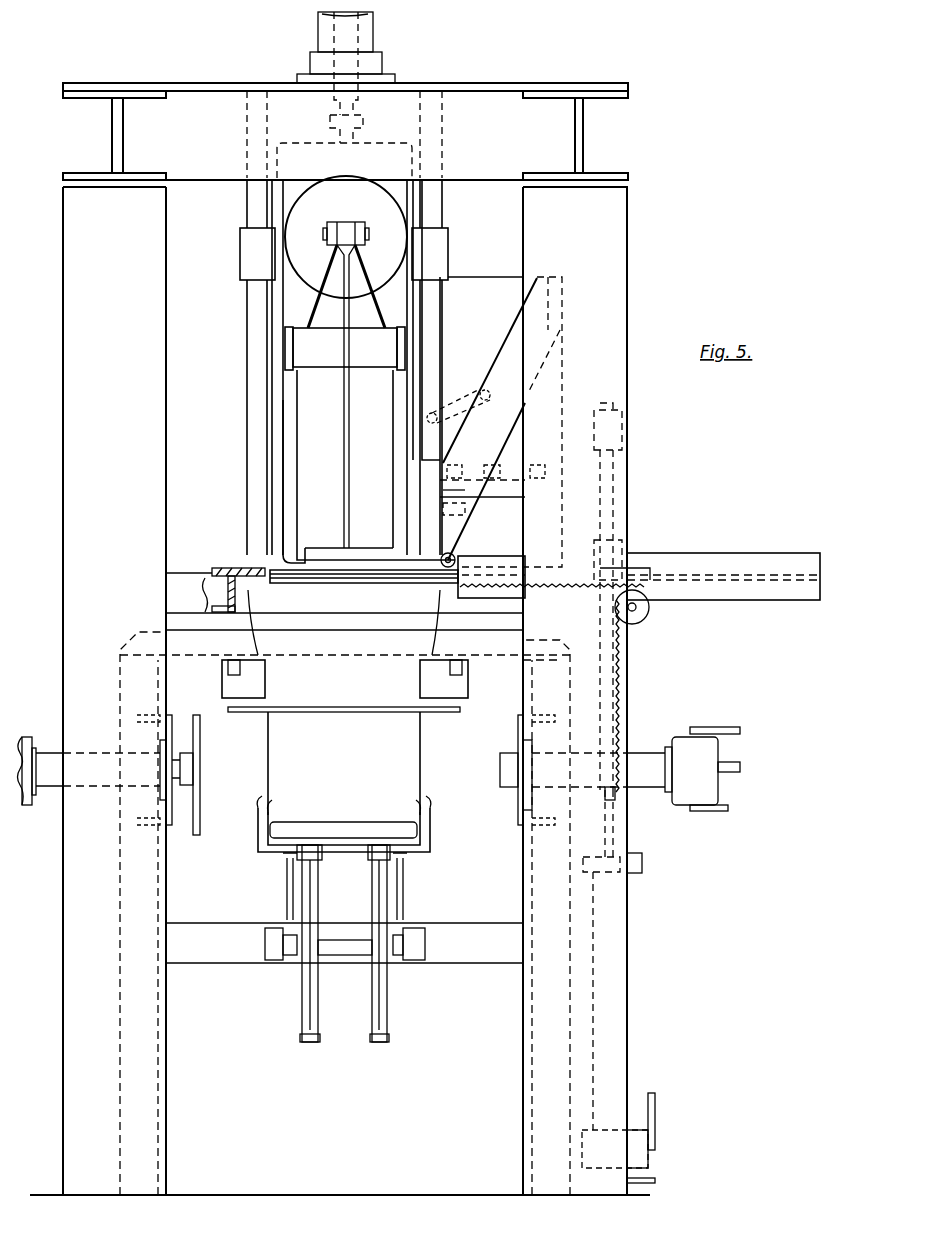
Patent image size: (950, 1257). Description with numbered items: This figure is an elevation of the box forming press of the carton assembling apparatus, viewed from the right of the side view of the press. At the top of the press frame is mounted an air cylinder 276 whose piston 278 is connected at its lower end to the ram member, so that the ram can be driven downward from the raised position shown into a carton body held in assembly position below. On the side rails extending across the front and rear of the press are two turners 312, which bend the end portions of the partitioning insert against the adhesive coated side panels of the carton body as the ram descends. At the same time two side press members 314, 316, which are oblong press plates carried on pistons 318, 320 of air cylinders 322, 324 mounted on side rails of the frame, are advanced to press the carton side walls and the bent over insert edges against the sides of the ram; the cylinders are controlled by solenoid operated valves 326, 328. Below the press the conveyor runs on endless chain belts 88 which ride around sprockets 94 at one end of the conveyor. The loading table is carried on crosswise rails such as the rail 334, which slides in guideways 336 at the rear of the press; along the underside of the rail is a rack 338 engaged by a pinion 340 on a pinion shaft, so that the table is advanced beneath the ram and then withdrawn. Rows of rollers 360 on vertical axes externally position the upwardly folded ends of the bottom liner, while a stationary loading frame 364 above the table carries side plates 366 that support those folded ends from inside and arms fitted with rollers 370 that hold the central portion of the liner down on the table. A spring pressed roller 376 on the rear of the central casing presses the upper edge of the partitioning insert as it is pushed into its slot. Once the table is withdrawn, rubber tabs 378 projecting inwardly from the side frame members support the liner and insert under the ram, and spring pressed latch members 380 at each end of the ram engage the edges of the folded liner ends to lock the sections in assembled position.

The endless chain belts 88 is at (375, 852).
The sprockets 94 is at (372, 990).
The air cylinder 276 is at (378, 45).
The piston 278 is at (328, 28).
The turners 312 is at (260, 678).
The side press member 314 is at (198, 833).
The side press member 316 is at (518, 815).
The piston 318 is at (186, 770).
The piston 320 is at (500, 770).
The air cylinder 322 is at (54, 790).
The air cylinder 324 is at (640, 760).
The solenoid operated valve 326 is at (24, 735).
The solenoid operated valve 328 is at (722, 755).
The rail 334 is at (363, 587).
The guideways 336 is at (700, 553).
The rack 338 is at (582, 590).
The pinion 340 is at (645, 617).
The rollers 360 is at (500, 462).
The stationary loading frame 364 is at (517, 328).
The side plates 366 is at (498, 288).
The rollers 370 is at (458, 554).
The spring pressed roller 376 is at (438, 410).
The rubber tabs 378 is at (236, 567).
The spring pressed latch members 380 is at (443, 507).